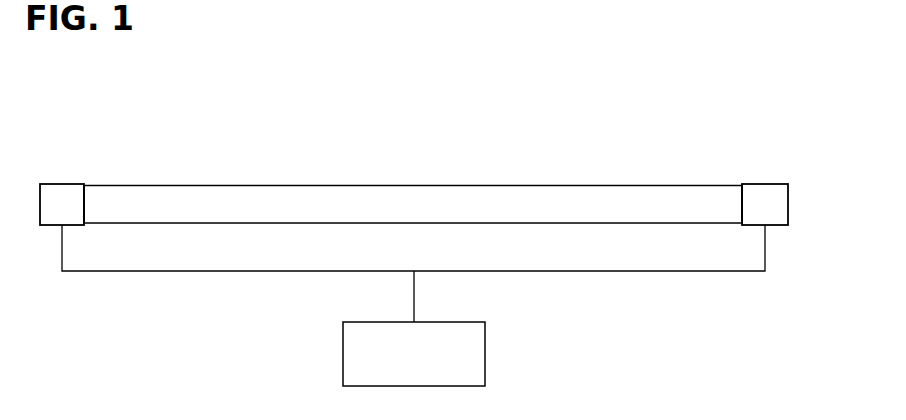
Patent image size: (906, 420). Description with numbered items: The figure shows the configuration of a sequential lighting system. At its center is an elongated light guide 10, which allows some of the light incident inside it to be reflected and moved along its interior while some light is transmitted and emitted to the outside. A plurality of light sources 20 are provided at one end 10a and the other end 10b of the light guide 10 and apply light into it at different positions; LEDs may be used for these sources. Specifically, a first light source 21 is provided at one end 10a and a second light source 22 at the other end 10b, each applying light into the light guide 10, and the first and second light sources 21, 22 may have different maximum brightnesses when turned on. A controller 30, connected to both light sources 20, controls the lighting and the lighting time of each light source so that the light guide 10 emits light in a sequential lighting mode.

The light guide 10 is at (435, 188).
The one end of the light guide 10a is at (102, 195).
The other end of the light guide 10b is at (727, 195).
The light sources 20 is at (414, 149).
The first light source 21 is at (65, 185).
The second light source 22 is at (762, 185).
The controller 30 is at (485, 353).